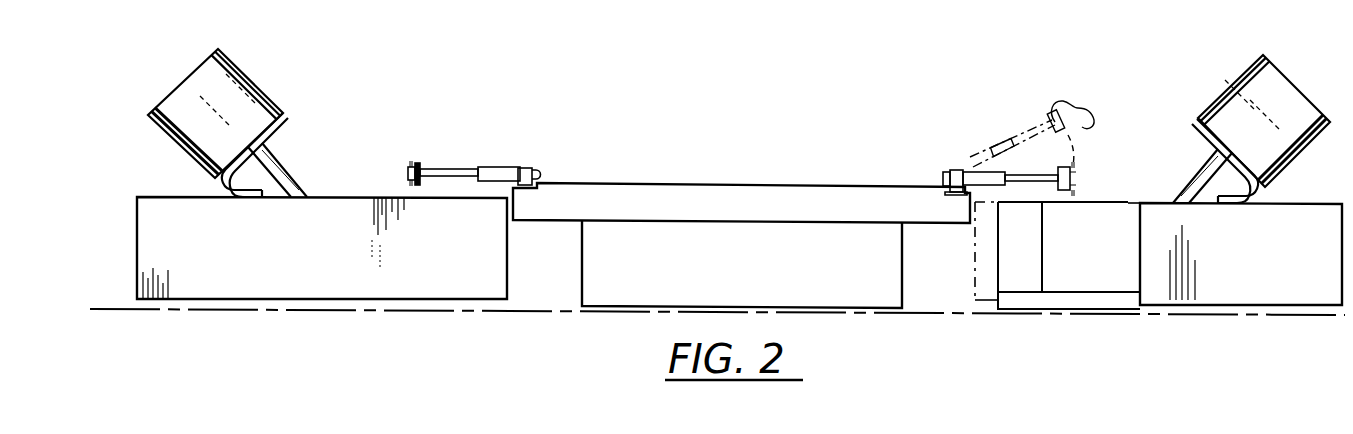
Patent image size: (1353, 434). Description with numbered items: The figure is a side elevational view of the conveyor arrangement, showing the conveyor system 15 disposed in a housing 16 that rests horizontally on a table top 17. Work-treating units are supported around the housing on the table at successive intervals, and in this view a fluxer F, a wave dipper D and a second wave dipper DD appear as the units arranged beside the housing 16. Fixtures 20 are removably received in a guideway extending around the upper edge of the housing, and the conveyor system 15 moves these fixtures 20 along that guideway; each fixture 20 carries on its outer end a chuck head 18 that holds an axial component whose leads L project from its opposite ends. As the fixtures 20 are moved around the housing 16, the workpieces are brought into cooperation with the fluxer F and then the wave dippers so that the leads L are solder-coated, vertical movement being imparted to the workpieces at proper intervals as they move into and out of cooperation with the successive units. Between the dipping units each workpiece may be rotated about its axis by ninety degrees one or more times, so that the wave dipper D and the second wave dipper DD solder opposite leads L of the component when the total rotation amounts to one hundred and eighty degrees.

The conveyor system 15 is at (609, 183).
The housing 16 is at (935, 300).
The table top 17 is at (431, 312).
The chuck head 18 is at (1074, 177).
The fixture 20 is at (500, 167).
The second wave dipper DD is at (342, 202).
The wave dipper D is at (1163, 203).
The fluxer F is at (1118, 293).
The lead L is at (1032, 132).